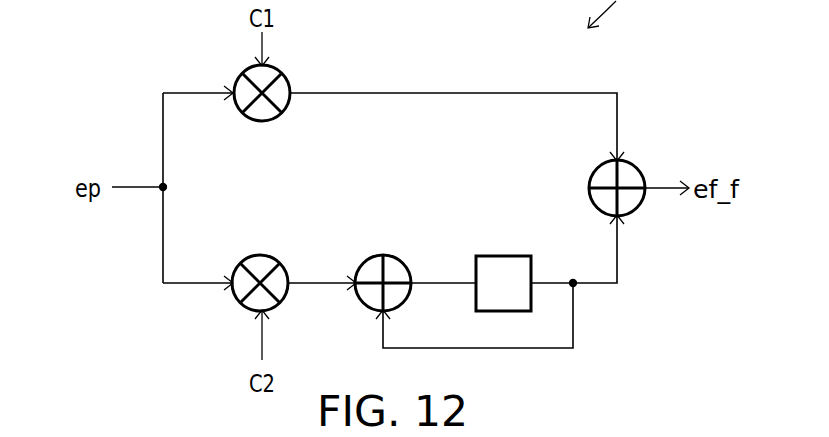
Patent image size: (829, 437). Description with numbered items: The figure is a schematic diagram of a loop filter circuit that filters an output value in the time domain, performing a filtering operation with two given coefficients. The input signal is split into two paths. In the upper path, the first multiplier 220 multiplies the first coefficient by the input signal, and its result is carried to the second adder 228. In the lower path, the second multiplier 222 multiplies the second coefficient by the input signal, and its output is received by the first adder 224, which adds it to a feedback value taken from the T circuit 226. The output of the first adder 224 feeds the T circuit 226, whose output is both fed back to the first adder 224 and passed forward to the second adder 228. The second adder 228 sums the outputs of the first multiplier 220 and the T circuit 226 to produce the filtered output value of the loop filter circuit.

The first multiplier 220 is at (282, 71).
The second multiplier 222 is at (258, 255).
The first adder 224 is at (368, 255).
The T circuit 226 is at (497, 255).
The second adder 228 is at (635, 163).